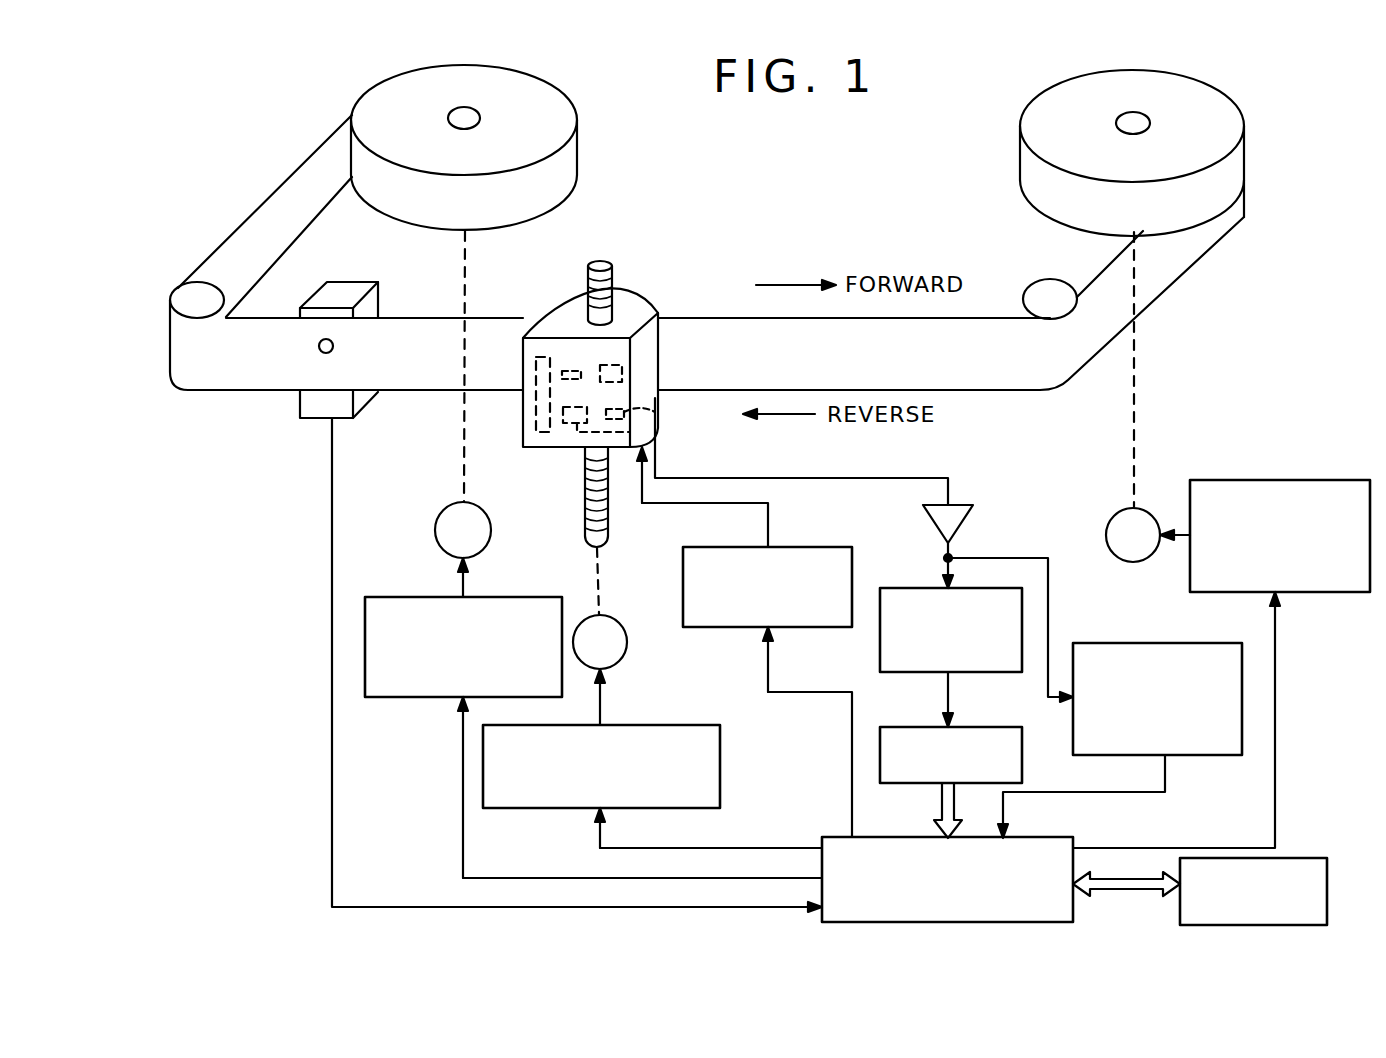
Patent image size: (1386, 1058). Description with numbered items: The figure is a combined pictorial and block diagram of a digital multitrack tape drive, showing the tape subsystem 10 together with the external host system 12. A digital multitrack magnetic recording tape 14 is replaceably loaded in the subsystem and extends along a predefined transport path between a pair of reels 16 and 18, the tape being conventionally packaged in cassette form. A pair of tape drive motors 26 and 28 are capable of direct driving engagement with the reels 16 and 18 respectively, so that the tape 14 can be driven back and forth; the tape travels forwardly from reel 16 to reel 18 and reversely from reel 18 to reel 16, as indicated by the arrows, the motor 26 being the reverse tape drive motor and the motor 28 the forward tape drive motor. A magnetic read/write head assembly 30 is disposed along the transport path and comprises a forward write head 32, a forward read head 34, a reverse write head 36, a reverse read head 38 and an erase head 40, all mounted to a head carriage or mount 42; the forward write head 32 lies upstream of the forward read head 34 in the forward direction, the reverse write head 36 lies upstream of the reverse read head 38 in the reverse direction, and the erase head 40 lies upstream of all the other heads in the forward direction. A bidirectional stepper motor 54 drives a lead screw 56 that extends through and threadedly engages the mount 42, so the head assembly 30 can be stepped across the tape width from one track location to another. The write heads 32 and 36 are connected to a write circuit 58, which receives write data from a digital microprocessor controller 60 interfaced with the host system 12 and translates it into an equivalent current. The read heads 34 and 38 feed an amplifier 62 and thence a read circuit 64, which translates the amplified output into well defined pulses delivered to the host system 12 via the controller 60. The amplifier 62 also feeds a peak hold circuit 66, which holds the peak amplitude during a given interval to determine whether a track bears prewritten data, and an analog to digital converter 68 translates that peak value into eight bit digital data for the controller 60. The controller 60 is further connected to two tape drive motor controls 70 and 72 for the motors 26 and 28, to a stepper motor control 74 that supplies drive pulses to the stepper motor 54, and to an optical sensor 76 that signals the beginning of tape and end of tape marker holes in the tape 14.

The tape subsystem 10 is at (270, 602).
The host system 12 is at (1300, 858).
The digital multitrack magnetic recording tape 14 is at (1003, 390).
The reel 16 is at (567, 124).
The reel 18 is at (1021, 122).
The reverse tape drive motor 26 is at (456, 506).
The forward tape drive motor 28 is at (1146, 508).
The magnetic read/write head assembly 30 is at (676, 302).
The forward write head 32 is at (567, 424).
The forward read head 34 is at (624, 414).
The reverse write head 36 is at (622, 368).
The reverse read head 38 is at (572, 371).
The erase head 40 is at (537, 357).
The head carriage or mount 42 is at (644, 312).
The bidirectional stepper motor 54 is at (628, 643).
The lead screw 56 is at (584, 505).
The write circuit 58 is at (814, 545).
The digital microprocessor controller 60 is at (893, 836).
The amplifier 62 is at (966, 517).
The read circuit 64 is at (1160, 642).
The peak hold circuit 66 is at (917, 674).
The analog to digital converter 68 is at (978, 725).
The tape drive motor control 70 is at (426, 698).
The tape drive motor control 72 is at (1270, 480).
The stepper motor control 74 is at (722, 766).
The optical sensor 76 is at (320, 420).